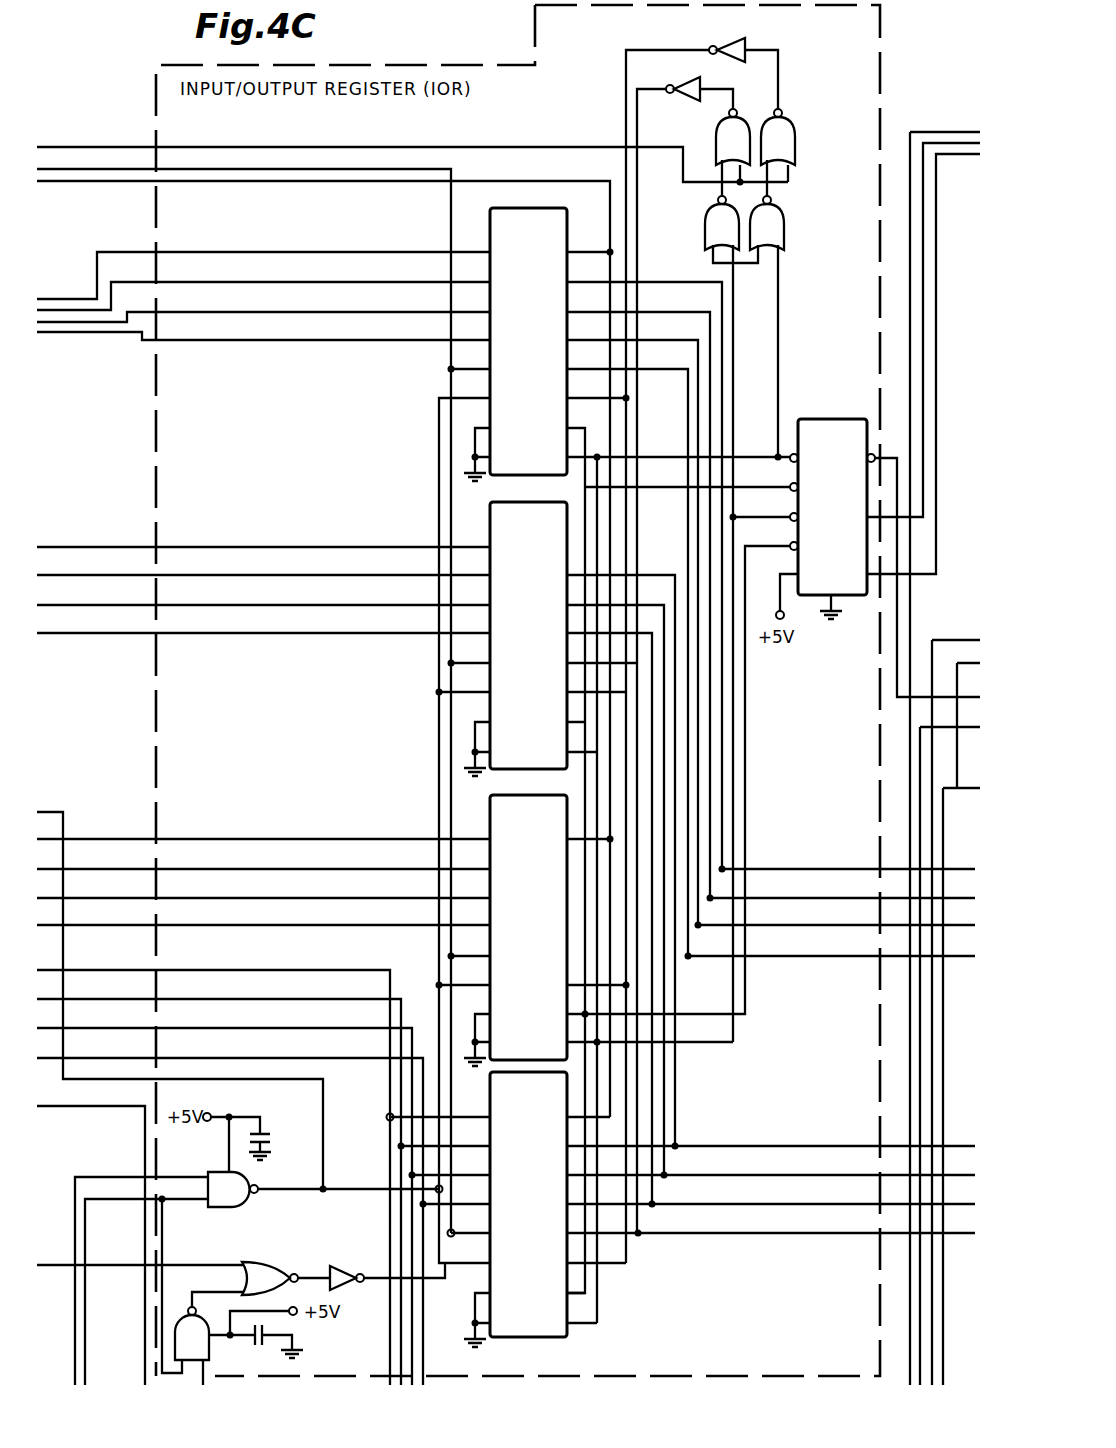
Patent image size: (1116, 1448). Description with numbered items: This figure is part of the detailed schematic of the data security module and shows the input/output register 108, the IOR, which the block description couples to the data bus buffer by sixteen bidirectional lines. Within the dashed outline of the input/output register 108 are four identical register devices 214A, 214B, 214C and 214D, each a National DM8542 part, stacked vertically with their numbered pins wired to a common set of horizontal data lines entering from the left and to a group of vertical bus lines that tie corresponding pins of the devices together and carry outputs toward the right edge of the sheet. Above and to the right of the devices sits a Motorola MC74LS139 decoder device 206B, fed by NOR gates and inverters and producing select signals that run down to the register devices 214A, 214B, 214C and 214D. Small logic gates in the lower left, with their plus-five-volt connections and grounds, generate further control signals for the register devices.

The input/output register 108 is at (541, 135).
The DM8542 register device 214A is at (506, 1099).
The DM8542 register device 214B is at (506, 822).
The DM8542 register device 214C is at (506, 529).
The DM8542 register device 214D is at (506, 235).
The MC74LS139 decoder device 206B is at (811, 445).